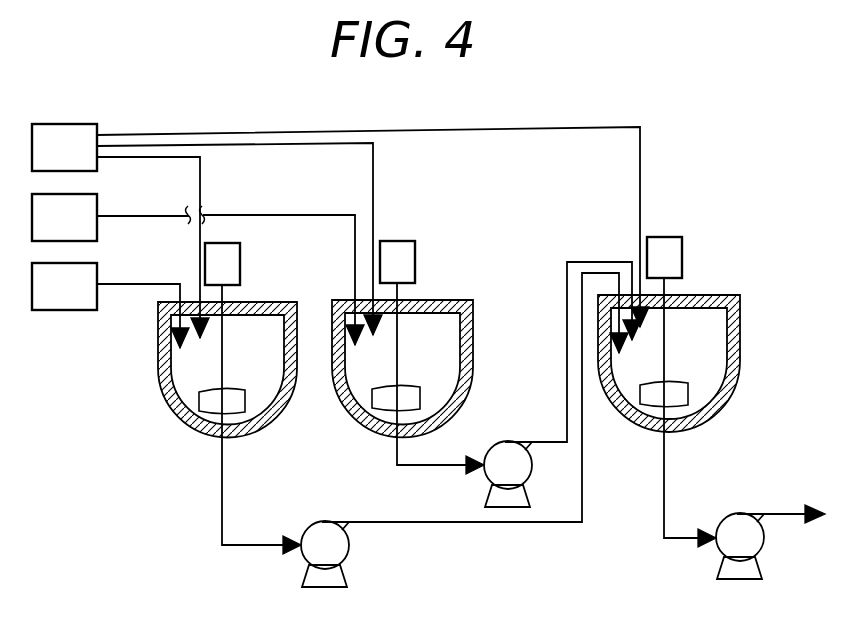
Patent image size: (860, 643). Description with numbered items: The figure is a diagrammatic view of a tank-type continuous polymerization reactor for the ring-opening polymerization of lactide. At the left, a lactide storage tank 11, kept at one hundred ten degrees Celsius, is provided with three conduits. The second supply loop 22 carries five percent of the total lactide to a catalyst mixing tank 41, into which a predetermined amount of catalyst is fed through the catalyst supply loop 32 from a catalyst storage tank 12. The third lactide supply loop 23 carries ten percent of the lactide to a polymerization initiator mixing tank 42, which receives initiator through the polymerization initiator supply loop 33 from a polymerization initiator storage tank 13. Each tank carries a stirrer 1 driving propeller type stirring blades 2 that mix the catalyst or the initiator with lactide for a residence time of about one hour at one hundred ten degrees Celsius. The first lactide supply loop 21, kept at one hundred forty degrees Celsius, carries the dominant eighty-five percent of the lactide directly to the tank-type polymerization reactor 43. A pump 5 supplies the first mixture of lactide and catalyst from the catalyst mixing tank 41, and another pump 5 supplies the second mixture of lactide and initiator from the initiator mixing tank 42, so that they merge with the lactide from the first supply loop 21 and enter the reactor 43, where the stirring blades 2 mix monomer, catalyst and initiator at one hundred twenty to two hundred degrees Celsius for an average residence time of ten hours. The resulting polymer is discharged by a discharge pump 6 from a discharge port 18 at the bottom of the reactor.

The lactide storage tank 11 is at (64, 147).
The solvent supply unit 12 is at (64, 286).
The additive supply unit 13 is at (64, 217).
The stirring motor 1 is at (443, 261).
The stirring blades 2 is at (243, 396).
The first lactide supply loop 21 is at (644, 137).
The second supply loop 22 is at (203, 178).
The third lactide supply loop 23 is at (375, 172).
The catalyst supply loop 32 is at (118, 283).
The polymerization initiator supply loop 33 is at (280, 214).
The catalyst mixing tank 41 is at (190, 403).
The polymerization initiator mixing tank 42 is at (363, 402).
The tank-type polymerization reactor 43 is at (632, 405).
The pump 5 is at (310, 553).
The discharge pump 6 is at (725, 547).
The discharge port 18 is at (790, 512).